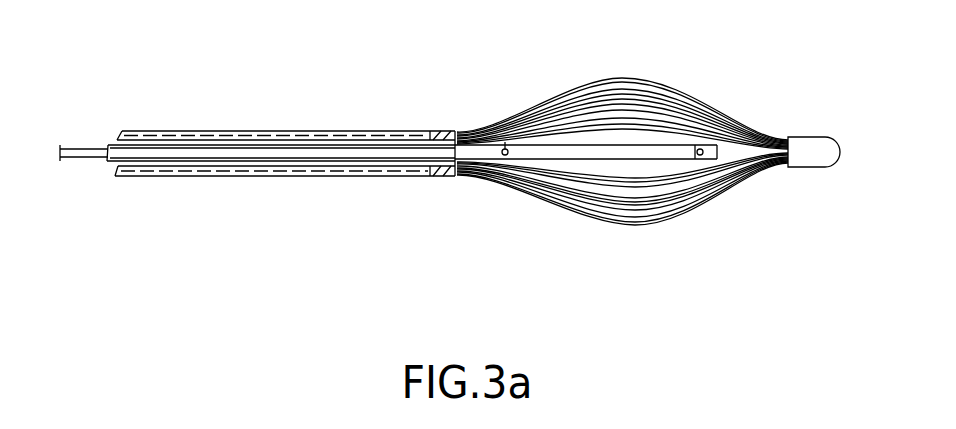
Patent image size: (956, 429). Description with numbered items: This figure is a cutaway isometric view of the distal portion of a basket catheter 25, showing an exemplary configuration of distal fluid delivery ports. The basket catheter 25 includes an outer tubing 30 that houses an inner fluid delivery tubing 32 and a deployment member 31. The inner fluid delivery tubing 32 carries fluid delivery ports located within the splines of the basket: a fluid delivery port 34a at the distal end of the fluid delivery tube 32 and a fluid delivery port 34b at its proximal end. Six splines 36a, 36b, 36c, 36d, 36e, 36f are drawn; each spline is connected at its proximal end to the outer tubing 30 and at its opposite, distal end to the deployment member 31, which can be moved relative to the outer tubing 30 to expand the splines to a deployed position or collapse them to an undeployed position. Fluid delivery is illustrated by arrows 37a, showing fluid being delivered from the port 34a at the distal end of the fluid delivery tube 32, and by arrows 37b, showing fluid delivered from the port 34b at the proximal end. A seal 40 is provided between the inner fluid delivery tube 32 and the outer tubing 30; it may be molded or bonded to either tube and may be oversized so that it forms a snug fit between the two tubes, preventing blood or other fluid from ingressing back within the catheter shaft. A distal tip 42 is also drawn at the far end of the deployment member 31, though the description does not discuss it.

The basket catheter 25 is at (760, 52).
The outer tubing 30 is at (258, 128).
The deployment member 31 is at (77, 149).
The inner fluid delivery tubing 32 is at (300, 165).
The fluid delivery port 34a is at (699, 149).
The fluid delivery port 34b is at (505, 148).
The spline 36a is at (629, 79).
The spline 36b is at (702, 100).
The spline 36c is at (625, 227).
The spline 36d is at (573, 194).
The spline 36e is at (753, 137).
The spline 36f is at (648, 184).
The arrows 37a is at (691, 165).
The arrows 37b is at (524, 178).
The seal 40 is at (444, 131).
The distal tip 42 is at (832, 168).